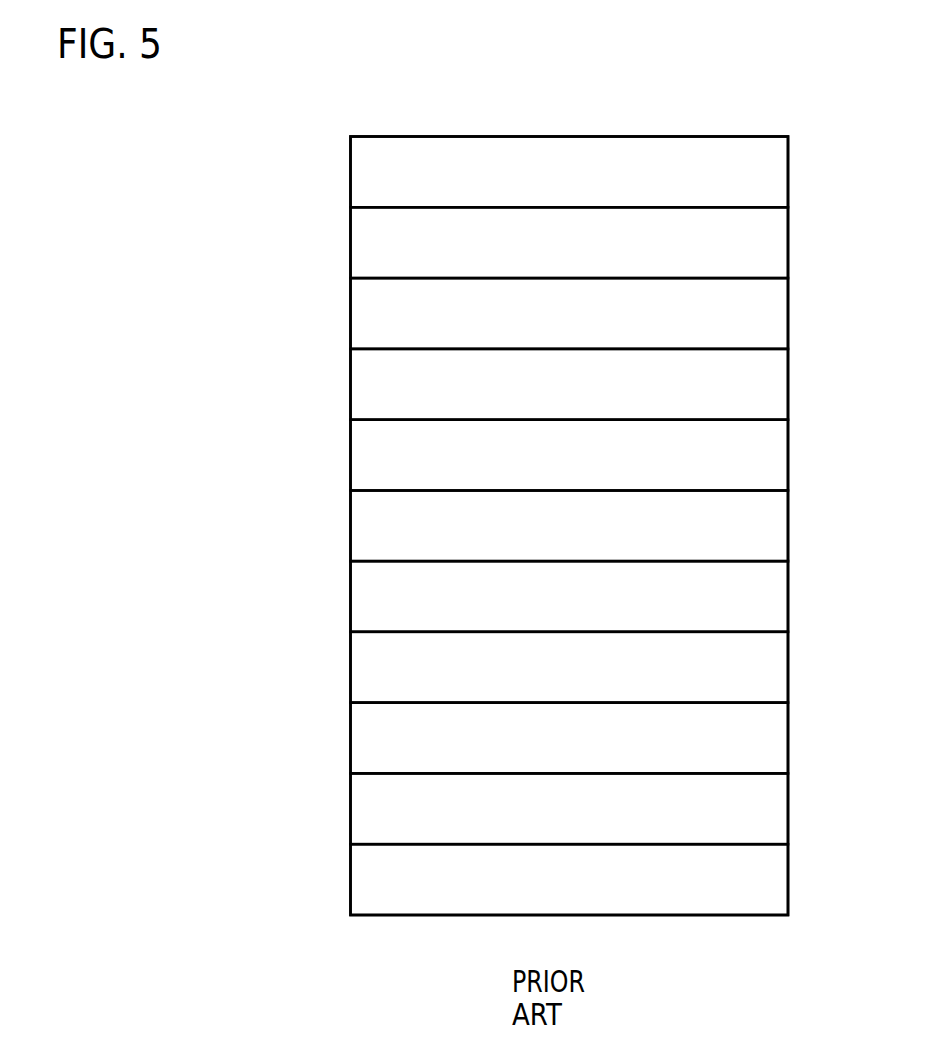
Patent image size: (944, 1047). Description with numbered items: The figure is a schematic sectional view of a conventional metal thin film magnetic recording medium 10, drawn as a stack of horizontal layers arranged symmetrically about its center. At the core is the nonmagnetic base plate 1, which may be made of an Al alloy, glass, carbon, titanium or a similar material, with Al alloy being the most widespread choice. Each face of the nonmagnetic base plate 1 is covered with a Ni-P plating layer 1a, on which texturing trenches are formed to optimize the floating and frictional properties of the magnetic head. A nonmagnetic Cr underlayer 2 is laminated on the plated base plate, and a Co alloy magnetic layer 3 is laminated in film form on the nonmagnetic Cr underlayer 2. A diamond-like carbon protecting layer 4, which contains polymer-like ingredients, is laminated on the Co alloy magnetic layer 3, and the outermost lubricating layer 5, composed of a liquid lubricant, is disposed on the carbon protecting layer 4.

The metal thin film magnetic recording medium 10 is at (604, 92).
The lubricating layer 5 is at (762, 176).
The carbon protecting layer 4 is at (762, 248).
The Co alloy magnetic layer 3 is at (762, 319).
The nonmagnetic Cr underlayer 2 is at (762, 390).
The Ni-P plating layer 1a is at (762, 462).
The nonmagnetic base plate 1 is at (762, 537).